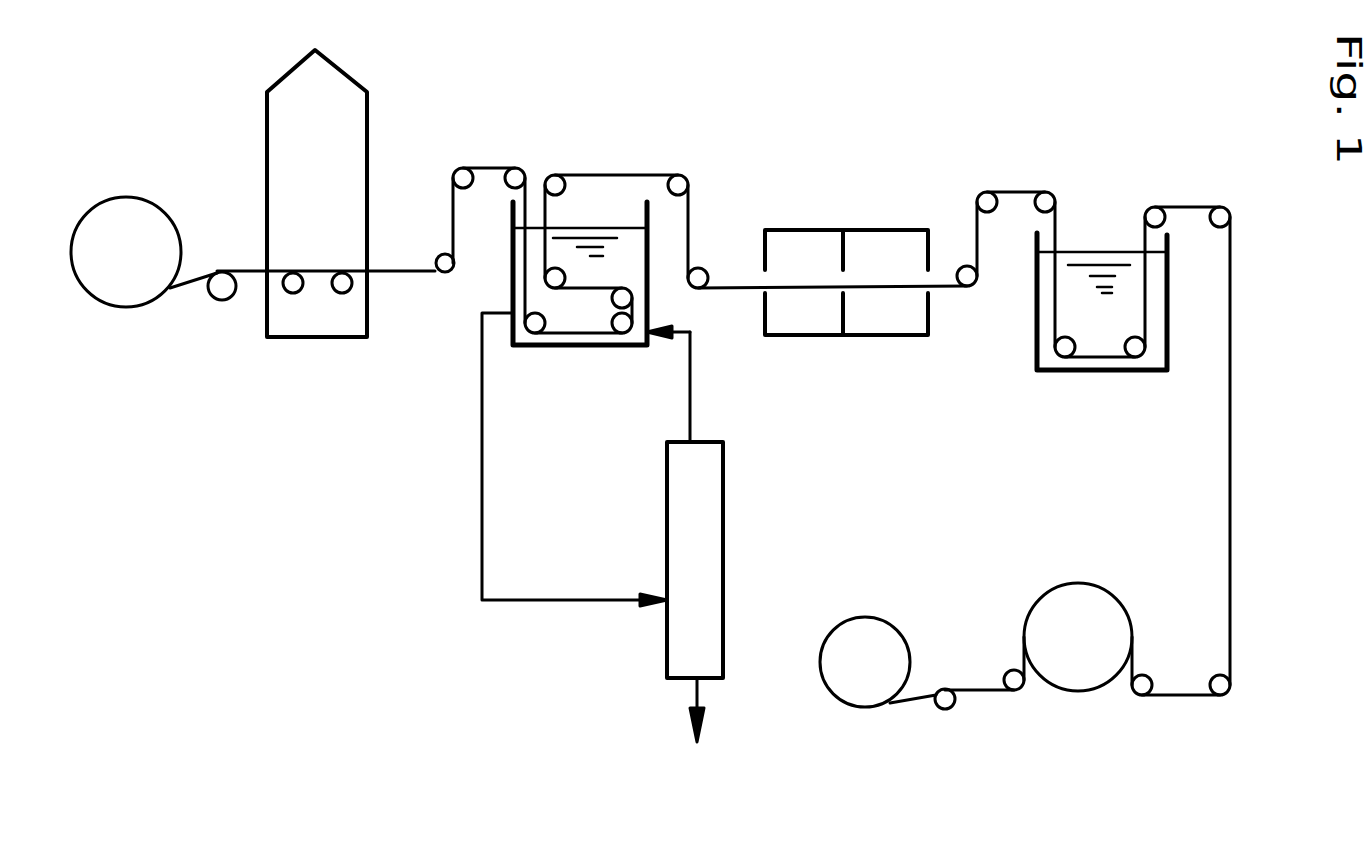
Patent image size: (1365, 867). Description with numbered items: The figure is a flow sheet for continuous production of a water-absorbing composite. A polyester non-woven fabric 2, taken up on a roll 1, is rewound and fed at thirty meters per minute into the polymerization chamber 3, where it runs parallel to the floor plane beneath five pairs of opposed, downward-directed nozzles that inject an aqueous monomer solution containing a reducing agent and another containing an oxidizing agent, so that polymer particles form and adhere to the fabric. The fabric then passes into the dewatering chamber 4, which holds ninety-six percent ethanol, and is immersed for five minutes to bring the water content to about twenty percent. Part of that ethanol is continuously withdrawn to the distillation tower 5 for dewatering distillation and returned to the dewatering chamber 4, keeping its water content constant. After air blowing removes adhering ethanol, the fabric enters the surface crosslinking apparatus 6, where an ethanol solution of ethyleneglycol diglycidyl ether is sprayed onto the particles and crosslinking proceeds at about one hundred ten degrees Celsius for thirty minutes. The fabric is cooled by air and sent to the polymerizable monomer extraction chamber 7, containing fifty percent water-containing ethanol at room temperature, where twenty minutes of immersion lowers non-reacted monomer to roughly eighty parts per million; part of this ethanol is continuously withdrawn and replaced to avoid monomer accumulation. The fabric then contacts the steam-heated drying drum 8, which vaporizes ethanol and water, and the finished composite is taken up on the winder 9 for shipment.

The roll of non-woven fabric 1 is at (127, 307).
The non-woven fabric 2 is at (187, 288).
The polymerization chamber 3 is at (367, 180).
The dewatering chamber 4 is at (593, 347).
The distillation tower 5 is at (723, 547).
The surface crosslinking apparatus 6 is at (803, 335).
The polymerizable monomer extraction chamber 7 is at (1065, 372).
The drying drum 8 is at (1070, 582).
The winder 9 is at (822, 680).